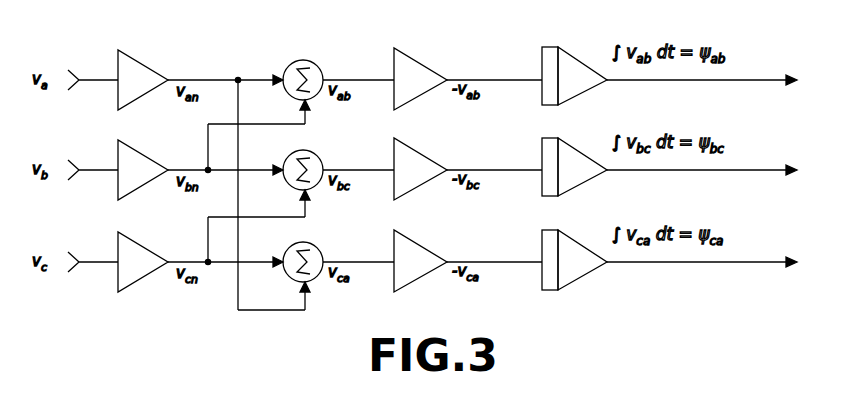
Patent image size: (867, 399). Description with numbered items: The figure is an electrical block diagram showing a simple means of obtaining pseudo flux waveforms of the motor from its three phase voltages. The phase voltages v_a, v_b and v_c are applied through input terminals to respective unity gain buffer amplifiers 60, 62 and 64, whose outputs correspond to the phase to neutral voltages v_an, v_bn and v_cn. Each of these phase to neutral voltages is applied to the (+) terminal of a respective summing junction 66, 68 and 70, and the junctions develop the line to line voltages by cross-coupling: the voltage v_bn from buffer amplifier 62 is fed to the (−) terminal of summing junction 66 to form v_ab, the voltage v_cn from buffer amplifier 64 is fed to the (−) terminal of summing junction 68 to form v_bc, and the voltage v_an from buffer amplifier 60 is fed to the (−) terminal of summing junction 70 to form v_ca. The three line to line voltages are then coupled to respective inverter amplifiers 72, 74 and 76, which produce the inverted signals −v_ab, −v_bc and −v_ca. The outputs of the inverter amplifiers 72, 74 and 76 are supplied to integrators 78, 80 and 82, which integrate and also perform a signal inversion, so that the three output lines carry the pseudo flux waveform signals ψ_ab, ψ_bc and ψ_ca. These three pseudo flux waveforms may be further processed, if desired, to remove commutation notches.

The unity gain buffer amplifier 60 is at (148, 68).
The unity gain buffer amplifier 62 is at (148, 158).
The unity gain buffer amplifier 64 is at (148, 252).
The summing junction 66 is at (314, 65).
The summing junction 68 is at (314, 155).
The summing junction 70 is at (314, 248).
The inverter amplifier 72 is at (425, 66).
The inverter amplifier 74 is at (425, 157).
The inverter amplifier 76 is at (425, 249).
The integrator 78 is at (578, 63).
The integrator 80 is at (581, 152).
The integrator 82 is at (581, 244).